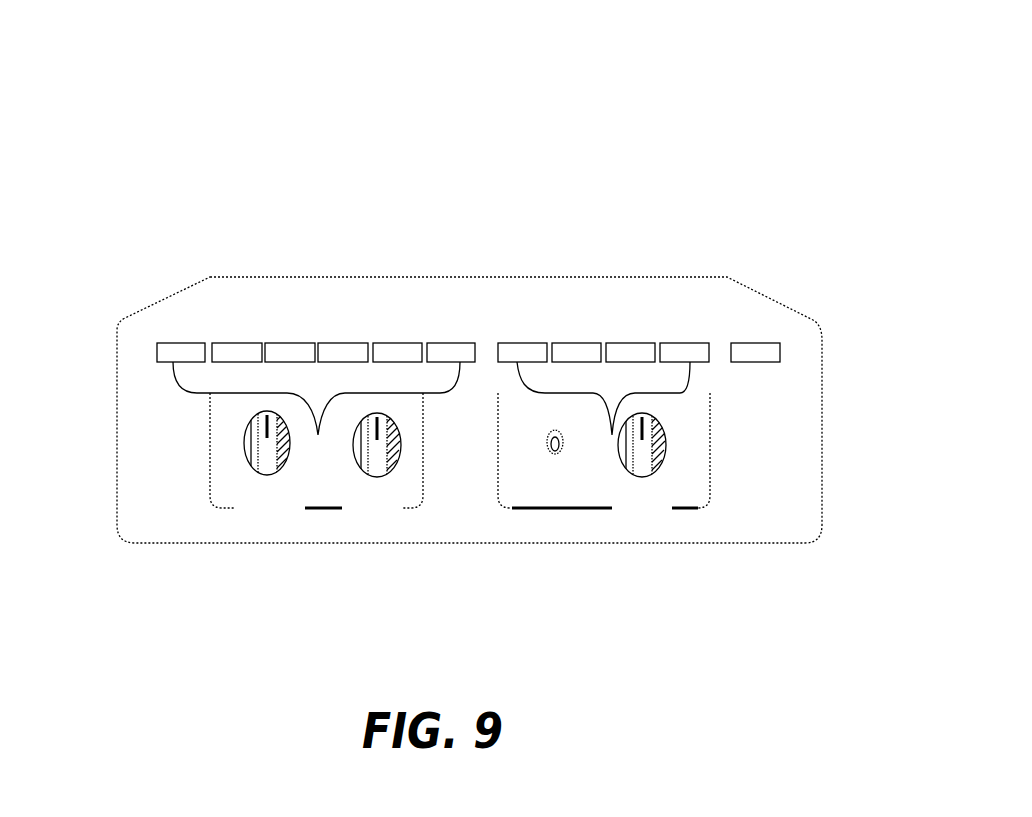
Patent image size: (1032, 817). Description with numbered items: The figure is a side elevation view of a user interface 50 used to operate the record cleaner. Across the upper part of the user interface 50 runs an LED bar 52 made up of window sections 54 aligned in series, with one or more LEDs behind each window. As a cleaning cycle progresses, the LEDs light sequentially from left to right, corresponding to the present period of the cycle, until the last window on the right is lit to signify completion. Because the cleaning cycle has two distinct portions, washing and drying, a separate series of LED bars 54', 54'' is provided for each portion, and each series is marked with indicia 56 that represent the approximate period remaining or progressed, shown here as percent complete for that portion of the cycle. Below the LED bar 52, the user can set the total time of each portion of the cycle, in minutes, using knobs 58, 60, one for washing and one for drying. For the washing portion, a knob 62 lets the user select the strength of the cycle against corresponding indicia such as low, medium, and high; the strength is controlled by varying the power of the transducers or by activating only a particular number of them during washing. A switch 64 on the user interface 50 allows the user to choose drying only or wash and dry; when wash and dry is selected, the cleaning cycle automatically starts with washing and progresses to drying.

The user interface 50 is at (577, 136).
The LED bar 52 is at (165, 350).
The window sections 54 is at (521, 257).
The indicia 56 is at (216, 350).
The knob 58 is at (256, 458).
The knob 60 is at (642, 468).
The knob 62 is at (392, 462).
The switch 64 is at (553, 455).
The series of LED bars 54' is at (316, 482).
The series of LED bars 54'' is at (603, 482).